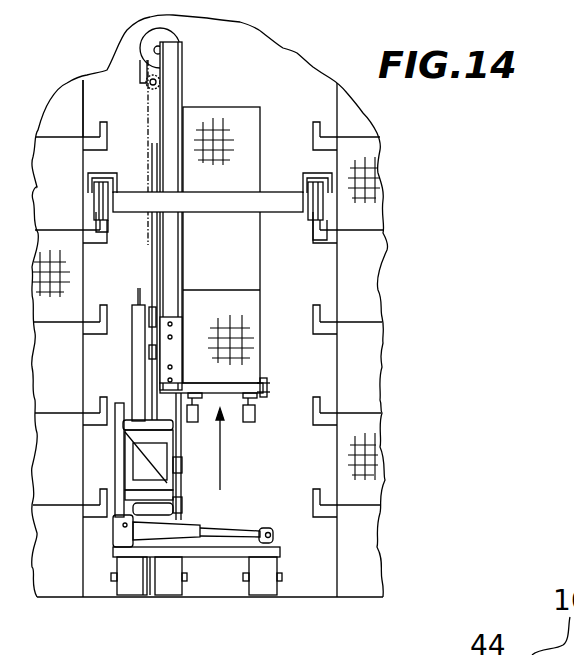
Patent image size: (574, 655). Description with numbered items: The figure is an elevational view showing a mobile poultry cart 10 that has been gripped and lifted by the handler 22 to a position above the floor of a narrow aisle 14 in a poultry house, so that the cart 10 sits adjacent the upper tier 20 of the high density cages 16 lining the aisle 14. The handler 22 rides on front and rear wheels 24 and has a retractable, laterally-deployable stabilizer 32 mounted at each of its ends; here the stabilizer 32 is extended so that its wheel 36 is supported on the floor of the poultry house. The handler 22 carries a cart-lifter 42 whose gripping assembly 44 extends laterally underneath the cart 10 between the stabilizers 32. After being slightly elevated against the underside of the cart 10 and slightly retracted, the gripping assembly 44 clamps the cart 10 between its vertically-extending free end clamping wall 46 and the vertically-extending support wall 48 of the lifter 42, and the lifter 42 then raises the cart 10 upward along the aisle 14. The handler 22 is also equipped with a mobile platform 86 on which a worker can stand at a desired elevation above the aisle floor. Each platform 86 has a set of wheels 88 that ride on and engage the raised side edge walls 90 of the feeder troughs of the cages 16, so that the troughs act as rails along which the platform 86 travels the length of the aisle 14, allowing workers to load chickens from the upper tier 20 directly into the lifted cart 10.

The mobile poultry cart 10 is at (257, 366).
The aisle 14 is at (302, 588).
The high density cages 16 is at (375, 366).
The upper tier 20 is at (365, 125).
The handler 22 is at (138, 353).
The wheels 24 is at (168, 590).
The stabilizer 32 is at (217, 553).
The wheel 36 is at (263, 595).
The cart-lifter 42 is at (172, 67).
The gripping assembly 44 is at (232, 395).
The clamping wall 46 is at (268, 392).
The support wall 48 is at (183, 328).
The mobile platform 86 is at (300, 177).
The wheels 88 is at (93, 210).
The raised side edge walls 90 is at (100, 232).